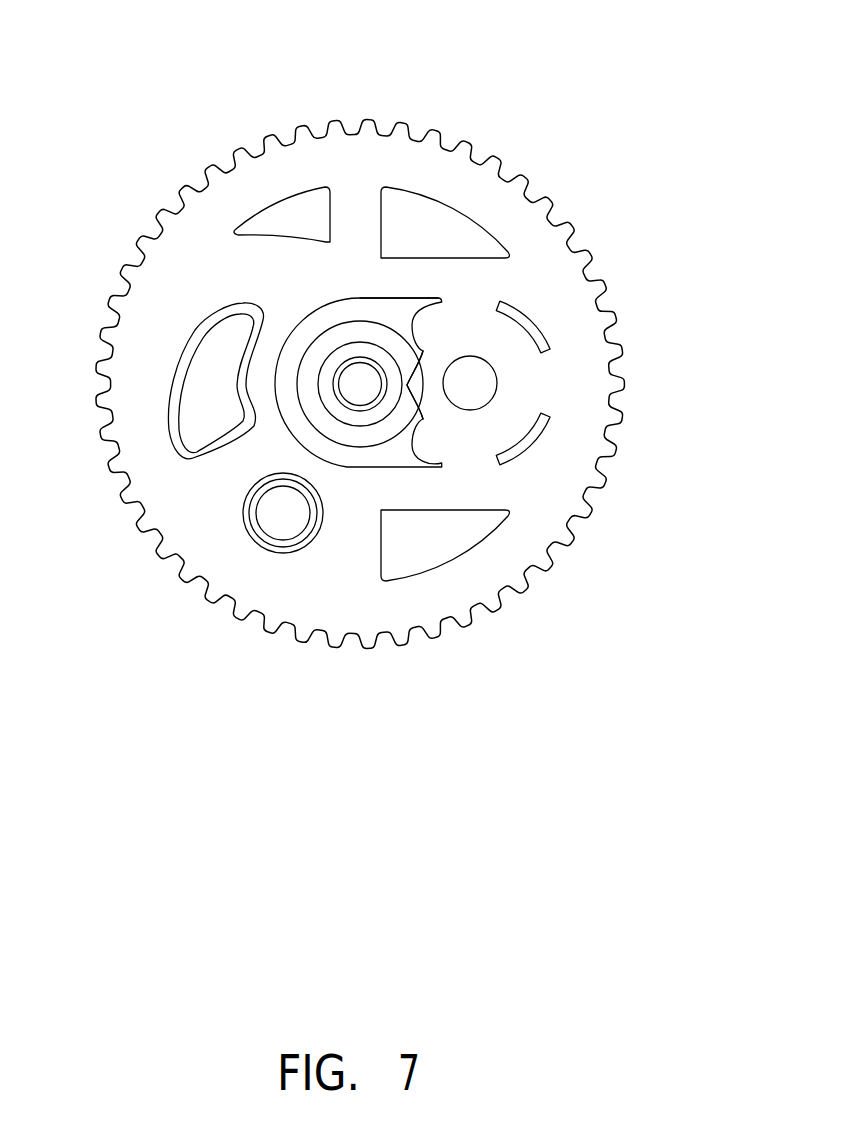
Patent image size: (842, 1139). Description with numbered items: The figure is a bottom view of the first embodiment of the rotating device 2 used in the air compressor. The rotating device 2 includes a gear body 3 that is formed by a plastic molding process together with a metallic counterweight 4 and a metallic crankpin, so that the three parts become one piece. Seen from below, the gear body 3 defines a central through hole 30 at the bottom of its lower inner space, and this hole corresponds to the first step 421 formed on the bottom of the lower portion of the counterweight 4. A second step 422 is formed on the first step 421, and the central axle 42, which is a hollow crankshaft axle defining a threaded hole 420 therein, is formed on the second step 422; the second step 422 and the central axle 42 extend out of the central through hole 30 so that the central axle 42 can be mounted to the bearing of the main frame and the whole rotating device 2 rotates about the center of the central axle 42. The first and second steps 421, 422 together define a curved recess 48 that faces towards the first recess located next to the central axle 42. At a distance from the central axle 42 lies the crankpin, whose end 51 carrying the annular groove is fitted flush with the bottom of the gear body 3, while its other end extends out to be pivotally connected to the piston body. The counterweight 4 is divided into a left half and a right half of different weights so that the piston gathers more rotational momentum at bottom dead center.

The rotating device 2 is at (112, 87).
The gear body 3 is at (163, 252).
The central through hole 30 is at (360, 298).
The counterweight 4 is at (402, 306).
The central axle 42 is at (377, 413).
The threaded hole 420 is at (360, 384).
The first step 421 is at (297, 418).
The second step 422 is at (354, 436).
The curved recess 48 is at (407, 385).
The end of crankpin 51 is at (470, 383).